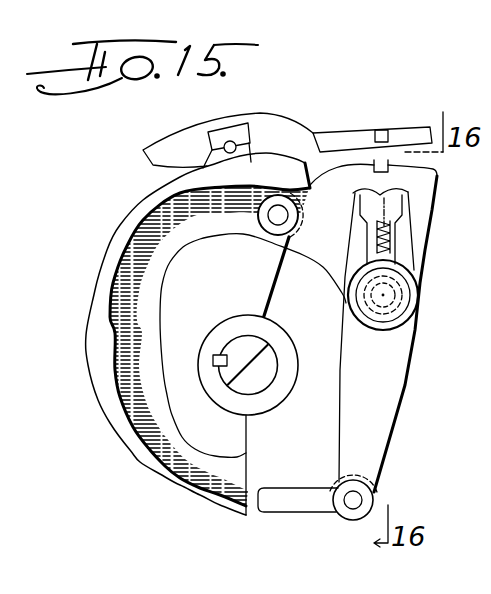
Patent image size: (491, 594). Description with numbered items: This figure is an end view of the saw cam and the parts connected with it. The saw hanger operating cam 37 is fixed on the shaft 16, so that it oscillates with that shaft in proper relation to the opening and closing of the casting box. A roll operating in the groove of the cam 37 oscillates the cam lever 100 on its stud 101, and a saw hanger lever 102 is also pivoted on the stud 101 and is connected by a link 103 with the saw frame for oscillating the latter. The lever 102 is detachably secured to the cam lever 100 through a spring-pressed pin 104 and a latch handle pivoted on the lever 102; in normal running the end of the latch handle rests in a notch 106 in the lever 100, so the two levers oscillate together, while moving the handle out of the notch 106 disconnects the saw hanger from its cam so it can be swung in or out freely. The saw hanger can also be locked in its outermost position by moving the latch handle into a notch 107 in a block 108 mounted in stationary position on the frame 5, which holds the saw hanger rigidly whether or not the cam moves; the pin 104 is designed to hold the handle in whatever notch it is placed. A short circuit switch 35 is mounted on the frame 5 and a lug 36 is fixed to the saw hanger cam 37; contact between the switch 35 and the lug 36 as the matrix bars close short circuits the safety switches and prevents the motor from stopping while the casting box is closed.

The frame 5 is at (143, 151).
The shaft 16 is at (257, 380).
The short circuit switch 35 is at (210, 142).
The lug 36 is at (254, 157).
The saw hanger operating cam 37 is at (128, 219).
The cam lever 100 is at (313, 264).
The stud 101 is at (392, 297).
The saw hanger lever 102 is at (380, 434).
The link 103 is at (300, 487).
The spring-pressed pin 104 is at (384, 213).
The notch 106 is at (388, 166).
The notch 107 is at (400, 106).
The block 108 is at (346, 126).